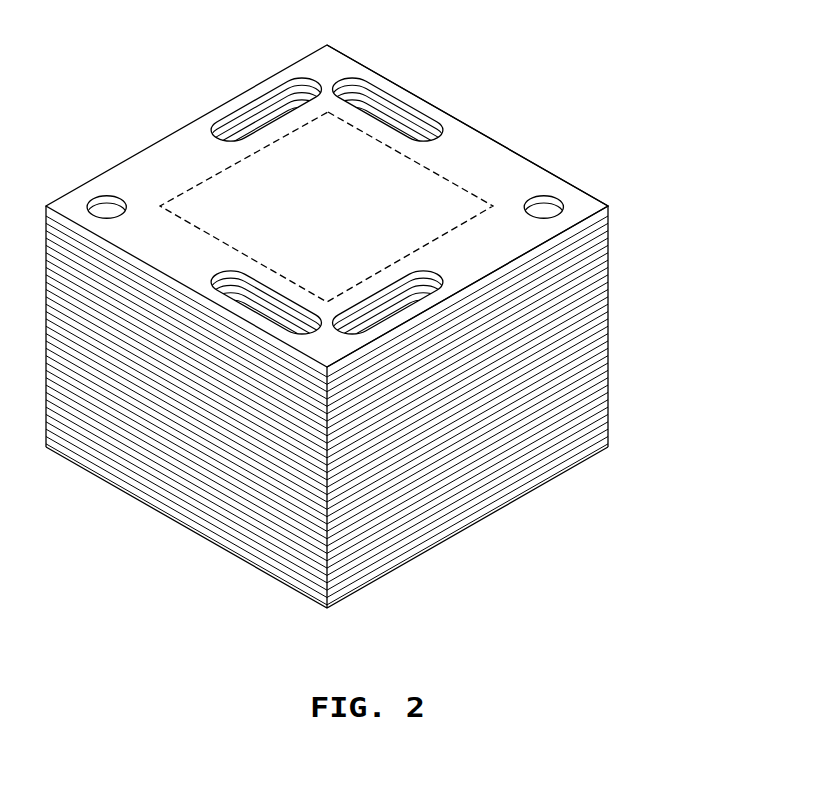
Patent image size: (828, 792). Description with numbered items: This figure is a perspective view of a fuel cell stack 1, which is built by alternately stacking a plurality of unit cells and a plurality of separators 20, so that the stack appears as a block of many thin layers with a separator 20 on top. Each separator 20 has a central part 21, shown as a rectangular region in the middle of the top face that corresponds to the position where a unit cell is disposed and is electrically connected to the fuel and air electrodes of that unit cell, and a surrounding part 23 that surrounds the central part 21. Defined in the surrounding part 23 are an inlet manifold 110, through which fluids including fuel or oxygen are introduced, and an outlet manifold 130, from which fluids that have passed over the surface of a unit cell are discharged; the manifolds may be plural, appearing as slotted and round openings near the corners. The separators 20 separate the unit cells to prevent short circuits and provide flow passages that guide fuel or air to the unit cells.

The fuel cell stack 1 is at (107, 121).
The separator 20 is at (593, 198).
The central part 21 is at (437, 175).
The surrounding part 23 is at (515, 173).
The inlet manifold 110 is at (405, 102).
The outlet manifold 130 is at (608, 237).